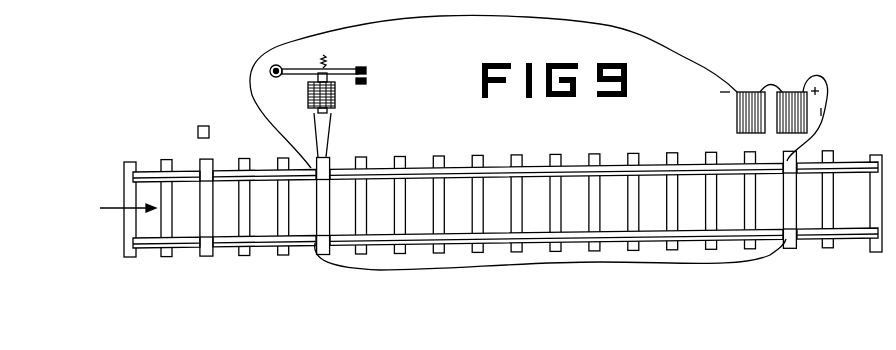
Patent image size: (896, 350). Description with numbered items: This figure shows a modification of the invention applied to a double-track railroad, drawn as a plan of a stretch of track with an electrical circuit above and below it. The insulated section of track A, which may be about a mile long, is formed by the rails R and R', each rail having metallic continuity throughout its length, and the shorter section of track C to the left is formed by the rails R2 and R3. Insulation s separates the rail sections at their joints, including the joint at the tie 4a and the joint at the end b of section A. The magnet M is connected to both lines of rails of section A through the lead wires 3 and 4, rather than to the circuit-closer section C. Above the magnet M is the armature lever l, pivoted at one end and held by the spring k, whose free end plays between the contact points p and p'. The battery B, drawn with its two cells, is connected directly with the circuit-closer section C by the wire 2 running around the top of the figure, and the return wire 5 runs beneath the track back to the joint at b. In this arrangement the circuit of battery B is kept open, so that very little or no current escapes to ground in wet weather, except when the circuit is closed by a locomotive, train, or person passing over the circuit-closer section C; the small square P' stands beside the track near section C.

The relay circuit wire 2 is at (493, 85).
The relay lead wire 3 is at (330, 135).
The relay lead wire 4 is at (307, 135).
The insulated joint tie 4a is at (329, 206).
The return wire 5 is at (550, 254).
The insulated section of railroad-track A is at (497, 204).
The battery B is at (774, 109).
The section of track C is at (232, 207).
The magnet M is at (305, 93).
The signal post P' is at (188, 123).
The rail R is at (604, 165).
The rail R' is at (604, 230).
The rail R2 is at (224, 166).
The rail R3 is at (224, 254).
The end of section b is at (780, 199).
The spring k is at (331, 58).
The armature lever l is at (314, 62).
The contact point p is at (368, 66).
The contact point p' is at (369, 80).
The insulation s is at (332, 184).